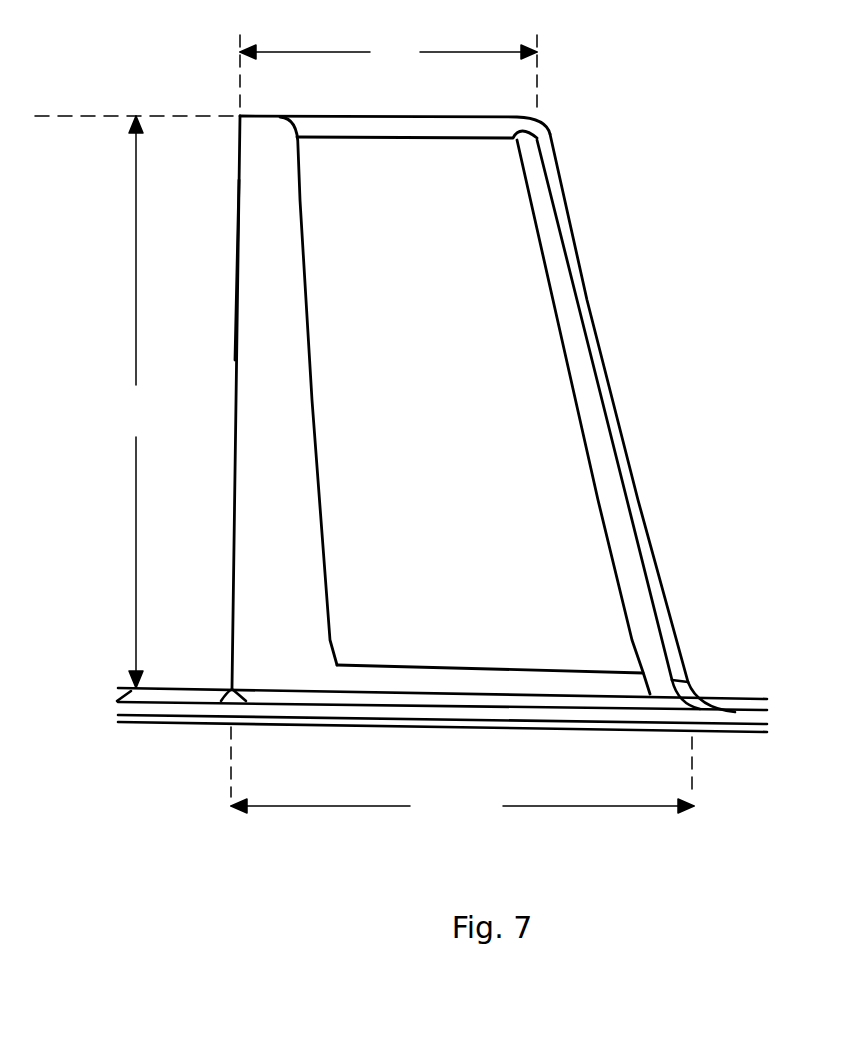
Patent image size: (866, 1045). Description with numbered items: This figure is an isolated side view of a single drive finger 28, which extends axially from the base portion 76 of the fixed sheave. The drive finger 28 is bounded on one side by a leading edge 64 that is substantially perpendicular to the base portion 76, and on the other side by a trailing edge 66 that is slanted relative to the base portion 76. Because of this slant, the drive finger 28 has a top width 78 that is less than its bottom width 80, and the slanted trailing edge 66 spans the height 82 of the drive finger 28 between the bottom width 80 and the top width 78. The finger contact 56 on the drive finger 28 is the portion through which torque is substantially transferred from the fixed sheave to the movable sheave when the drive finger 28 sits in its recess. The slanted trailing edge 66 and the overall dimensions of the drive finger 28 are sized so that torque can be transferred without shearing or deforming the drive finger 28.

The drive finger 28 is at (562, 180).
The finger contact 56 is at (275, 565).
The leading edge 64 is at (236, 266).
The trailing edge 66 is at (624, 425).
The base portion 76 is at (758, 708).
The top width 78 is at (388, 73).
The bottom width 80 is at (462, 773).
The height 82 is at (137, 402).